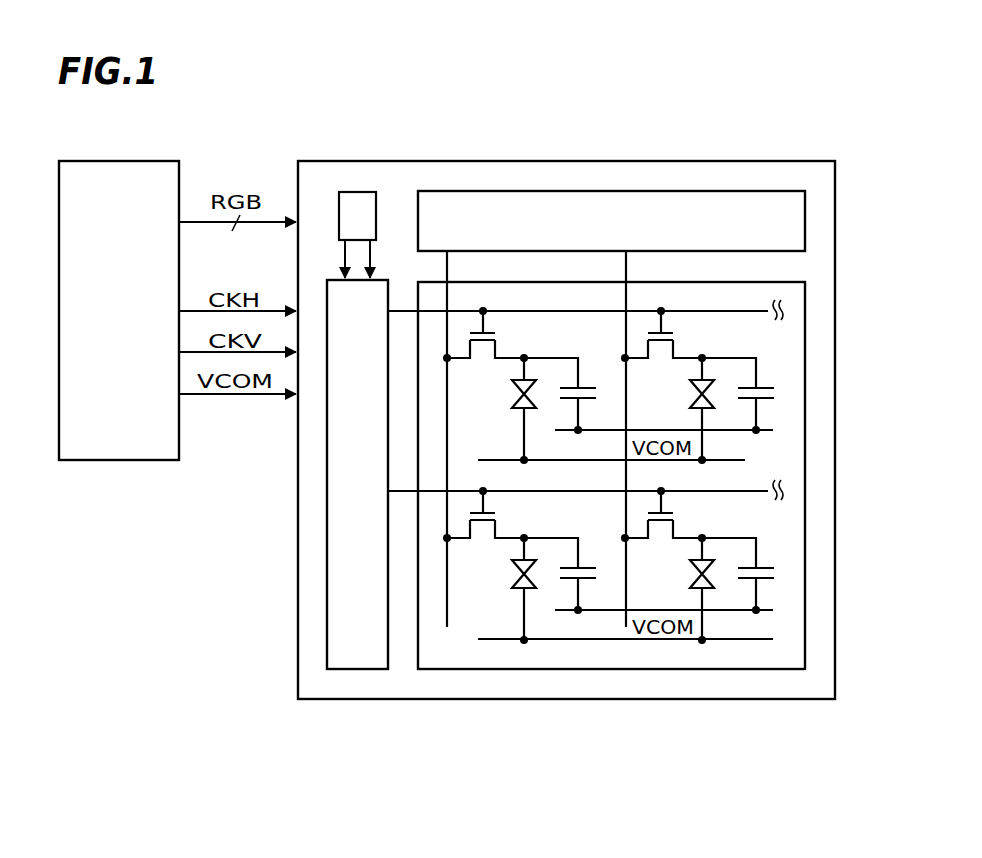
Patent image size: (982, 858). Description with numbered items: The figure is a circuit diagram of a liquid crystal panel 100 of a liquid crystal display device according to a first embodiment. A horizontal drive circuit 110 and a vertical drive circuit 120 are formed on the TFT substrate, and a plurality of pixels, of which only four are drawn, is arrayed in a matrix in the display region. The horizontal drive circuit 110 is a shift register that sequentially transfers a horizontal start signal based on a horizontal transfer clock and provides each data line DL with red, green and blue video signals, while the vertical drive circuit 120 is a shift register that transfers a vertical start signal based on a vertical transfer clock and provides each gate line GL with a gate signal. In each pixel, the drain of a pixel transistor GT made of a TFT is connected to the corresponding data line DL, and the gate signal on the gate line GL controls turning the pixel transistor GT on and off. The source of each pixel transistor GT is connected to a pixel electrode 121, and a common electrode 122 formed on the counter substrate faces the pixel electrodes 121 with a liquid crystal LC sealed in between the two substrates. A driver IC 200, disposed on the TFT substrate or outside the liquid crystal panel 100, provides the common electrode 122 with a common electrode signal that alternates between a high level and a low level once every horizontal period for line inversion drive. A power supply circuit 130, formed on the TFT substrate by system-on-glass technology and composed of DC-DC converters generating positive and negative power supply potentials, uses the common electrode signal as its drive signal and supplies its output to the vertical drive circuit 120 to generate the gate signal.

The liquid crystal panel 100 is at (645, 145).
The horizontal drive circuit 110 is at (503, 190).
The vertical drive circuit 120 is at (358, 670).
The pixel electrode 121 is at (525, 355).
The common electrode 122 is at (524, 463).
The power supply circuit 130 is at (353, 191).
The driver IC 200 is at (119, 462).
The gate line GL is at (753, 309).
The data line DL is at (448, 583).
The liquid crystal LC is at (708, 559).
The pixel transistor GT is at (482, 363).